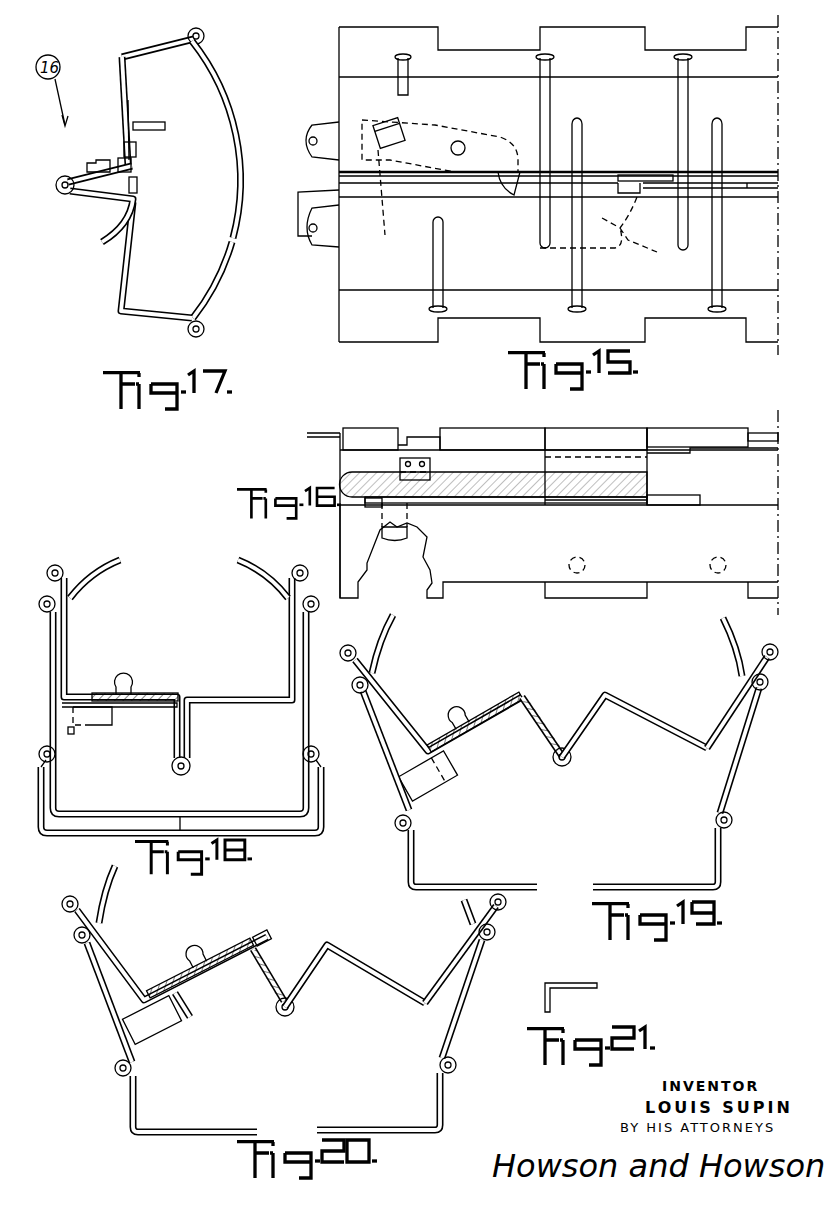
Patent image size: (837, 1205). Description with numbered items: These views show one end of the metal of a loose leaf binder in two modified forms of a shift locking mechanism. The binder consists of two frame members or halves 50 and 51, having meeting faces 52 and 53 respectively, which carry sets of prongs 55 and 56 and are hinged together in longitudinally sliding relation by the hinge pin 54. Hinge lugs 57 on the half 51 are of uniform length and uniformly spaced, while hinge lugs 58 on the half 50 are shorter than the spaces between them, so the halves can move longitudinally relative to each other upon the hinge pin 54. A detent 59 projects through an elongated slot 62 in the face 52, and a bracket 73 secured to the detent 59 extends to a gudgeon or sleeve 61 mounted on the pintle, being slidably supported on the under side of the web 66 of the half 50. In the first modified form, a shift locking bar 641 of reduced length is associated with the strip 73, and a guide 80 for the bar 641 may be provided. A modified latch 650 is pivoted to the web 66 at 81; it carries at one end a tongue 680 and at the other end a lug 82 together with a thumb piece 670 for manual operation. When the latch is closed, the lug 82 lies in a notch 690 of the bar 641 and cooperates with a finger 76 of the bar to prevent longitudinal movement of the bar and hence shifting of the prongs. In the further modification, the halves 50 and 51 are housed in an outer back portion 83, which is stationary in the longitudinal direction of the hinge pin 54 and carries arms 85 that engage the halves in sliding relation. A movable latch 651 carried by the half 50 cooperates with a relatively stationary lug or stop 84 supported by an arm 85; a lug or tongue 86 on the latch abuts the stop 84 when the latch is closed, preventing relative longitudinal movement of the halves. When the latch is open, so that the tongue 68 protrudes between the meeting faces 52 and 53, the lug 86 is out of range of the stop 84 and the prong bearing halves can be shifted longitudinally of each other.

In FIG. 17, the frame member (half) 50 is at (140, 55).
In FIG. 15, the frame member (half) 50 is at (465, 63).
In FIG. 16, the frame member (half) 50 is at (462, 560).
In FIG. 18, the frame member (half) 50 is at (68, 640).
In FIG. 19, the frame member (half) 50 is at (431, 698).
In FIG. 20, the frame member (half) 50 is at (120, 955).
In FIG. 17, the frame member (half) 51 is at (135, 315).
In FIG. 15, the frame member (half) 51 is at (628, 318).
In FIG. 18, the frame member (half) 51 is at (290, 635).
In FIG. 19, the frame member (half) 51 is at (742, 696).
In FIG. 20, the frame member (half) 51 is at (450, 955).
In FIG. 15, the meeting face 52 is at (343, 180).
In FIG. 19, the meeting face 52 is at (535, 710).
In FIG. 20, the meeting face 52 is at (305, 965).
In FIG. 15, the meeting face 53 is at (344, 192).
In FIG. 19, the meeting face 53 is at (592, 712).
In FIG. 20, the meeting face 53 is at (266, 963).
In FIG. 17, the hinge pin 54 is at (65, 196).
In FIG. 16, the hinge pin 54 is at (405, 437).
In FIG. 18, the hinge pin 54 is at (191, 767).
In FIG. 19, the hinge pin 54 is at (568, 765).
In FIG. 20, the hinge pin 54 is at (292, 1014).
In FIG. 17, the prongs 55 is at (222, 95).
In FIG. 15, the prongs 55 is at (545, 118).
In FIG. 18, the prongs 55 is at (88, 574).
In FIG. 19, the prongs 55 is at (380, 650).
In FIG. 20, the prongs 55 is at (100, 885).
In FIG. 17, the prongs 56 is at (210, 285).
In FIG. 15, the prongs 56 is at (715, 280).
In FIG. 18, the prongs 56 is at (262, 578).
In FIG. 19, the prongs 56 is at (735, 645).
In FIG. 20, the prongs 56 is at (462, 905).
In FIG. 16, the hinge lugs 57 is at (480, 430).
In FIG. 16, the hinge lugs 58 is at (365, 430).
In FIG. 15, the detent 59 is at (604, 227).
In FIG. 16, the detent 59 is at (600, 500).
In FIG. 16, the gudgeon or sleeve 61 is at (603, 432).
In FIG. 15, the elongated slot 62 is at (668, 172).
In FIG. 16, the elongated slot 62 is at (697, 500).
In FIG. 17, the web 66 is at (129, 97).
In FIG. 15, the web 66 is at (352, 103).
In FIG. 20, the tongue 68 is at (258, 932).
In FIG. 16, the bracket 73 is at (635, 467).
In FIG. 16, the finger 76 is at (352, 502).
In FIG. 17, the guide 80 is at (100, 161).
In FIG. 16, the guide 80 is at (413, 468).
In FIG. 17, the pivot 81 is at (142, 147).
In FIG. 15, the pivot 81 is at (462, 146).
In FIG. 16, the pivot 81 is at (455, 500).
In FIG. 15, the lug 82 is at (382, 195).
In FIG. 18, the outer back portion 83 is at (300, 790).
In FIG. 19, the outer back portion 83 is at (335, 779).
In FIG. 20, the outer back portion 83 is at (130, 1100).
In FIG. 18, the stop lug 84 is at (92, 718).
In FIG. 19, the stop lug 84 is at (428, 782).
In FIG. 20, the stop lug 84 is at (160, 1025).
In FIG. 21, the stop lug 84 is at (580, 990).
In FIG. 19, the arm 85 is at (396, 763).
In FIG. 20, the arm 85 is at (105, 985).
In FIG. 18, the lug or tongue 86 is at (71, 736).
In FIG. 20, the lug or tongue 86 is at (195, 1016).
In FIG. 17, the shift locking bar 641 is at (118, 160).
In FIG. 16, the shift locking bar 641 is at (455, 488).
In FIG. 17, the modified latch 650 is at (124, 138).
In FIG. 15, the modified latch 650 is at (420, 132).
In FIG. 16, the modified latch 650 is at (372, 508).
In FIG. 18, the movable latch 651 is at (156, 704).
In FIG. 19, the movable latch 651 is at (490, 726).
In FIG. 20, the movable latch 651 is at (240, 962).
In FIG. 17, the thumb piece 670 is at (158, 120).
In FIG. 15, the thumb piece 670 is at (390, 122).
In FIG. 16, the thumb piece 670 is at (393, 538).
In FIG. 17, the tongue 680 is at (140, 180).
In FIG. 15, the tongue 680 is at (507, 190).
In FIG. 16, the notch 690 is at (533, 500).